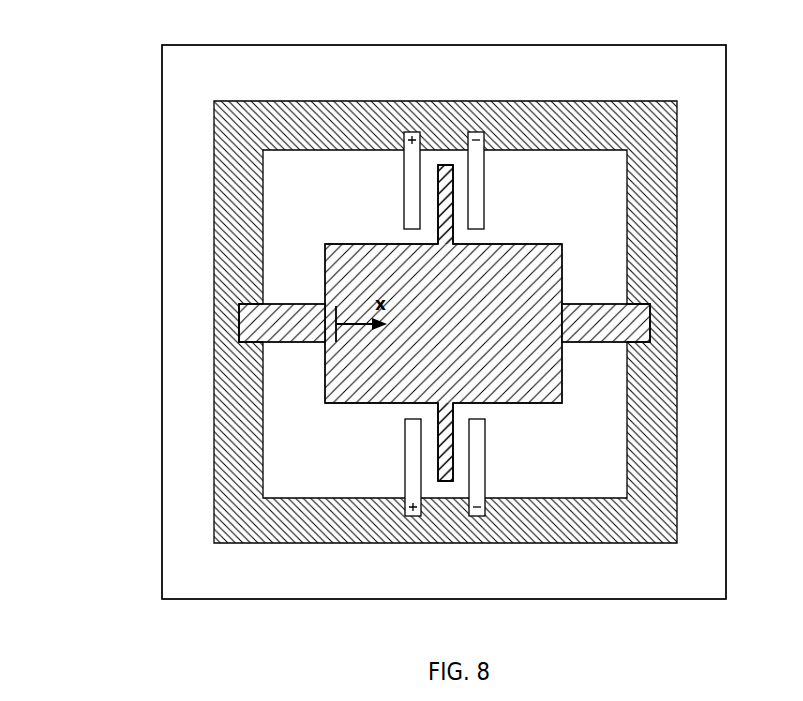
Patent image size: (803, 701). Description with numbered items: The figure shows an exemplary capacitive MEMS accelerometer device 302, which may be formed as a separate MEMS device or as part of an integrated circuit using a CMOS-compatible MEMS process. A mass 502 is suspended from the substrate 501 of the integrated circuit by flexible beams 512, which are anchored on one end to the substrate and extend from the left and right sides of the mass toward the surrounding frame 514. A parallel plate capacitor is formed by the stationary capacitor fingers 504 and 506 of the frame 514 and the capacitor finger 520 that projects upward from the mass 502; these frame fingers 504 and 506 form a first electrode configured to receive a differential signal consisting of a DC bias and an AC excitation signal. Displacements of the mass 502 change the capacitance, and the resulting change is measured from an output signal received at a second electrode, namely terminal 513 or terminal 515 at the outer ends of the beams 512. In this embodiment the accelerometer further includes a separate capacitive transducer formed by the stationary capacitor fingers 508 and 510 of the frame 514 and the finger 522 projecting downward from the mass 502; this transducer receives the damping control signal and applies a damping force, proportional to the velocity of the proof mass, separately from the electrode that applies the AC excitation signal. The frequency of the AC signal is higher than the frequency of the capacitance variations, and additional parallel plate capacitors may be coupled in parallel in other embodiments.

The MEMS accelerometer device 302 is at (119, 54).
The substrate 501 is at (208, 71).
The mass 502 is at (467, 340).
The capacitor finger 504 is at (415, 130).
The capacitor finger 506 is at (480, 130).
The capacitor finger 508 is at (412, 517).
The capacitor finger 510 is at (477, 517).
The beams 512 is at (601, 303).
The terminal 513 is at (232, 317).
The frame 514 is at (677, 220).
The terminal 515 is at (651, 330).
The capacitor finger 520 is at (448, 164).
The finger 522 is at (446, 482).